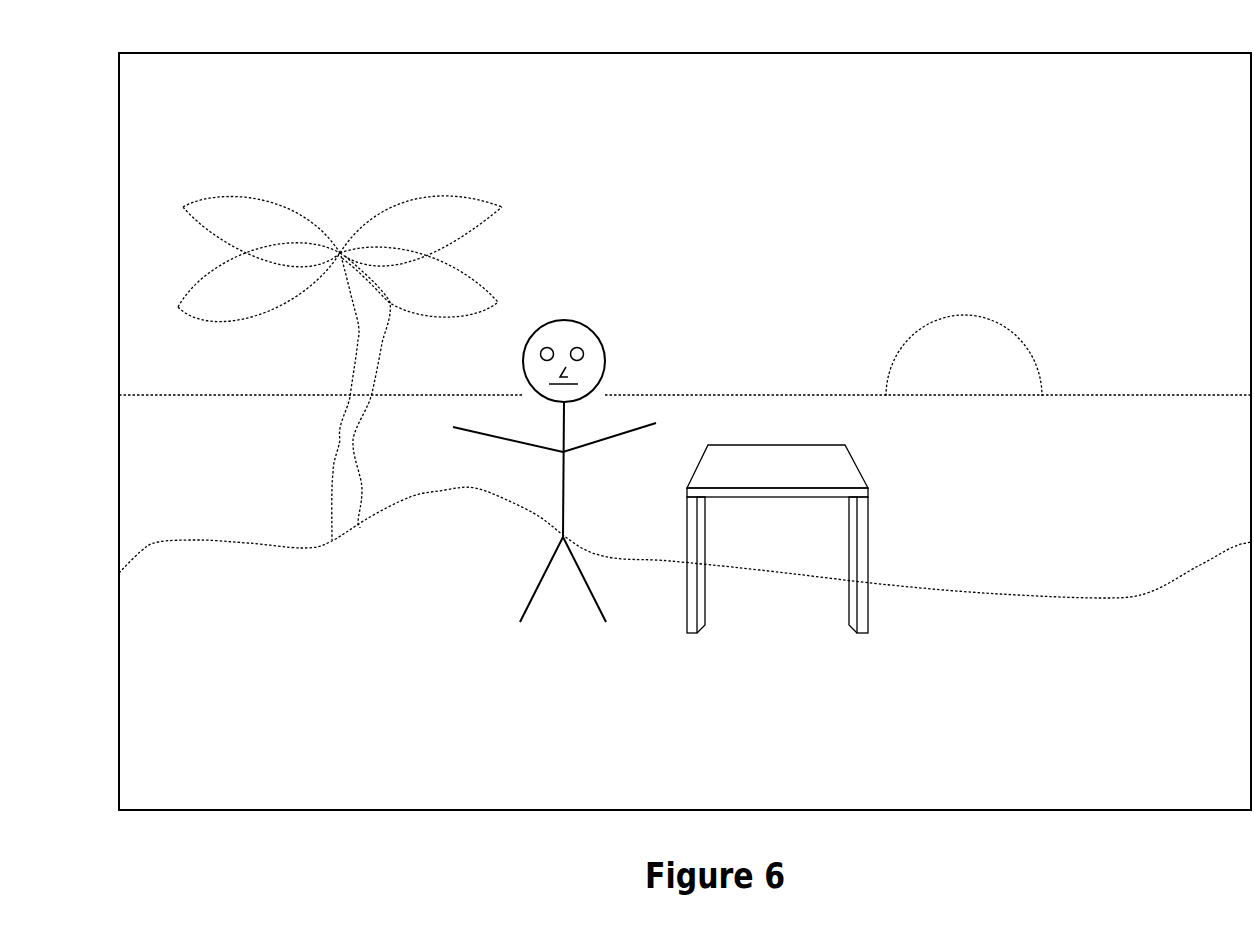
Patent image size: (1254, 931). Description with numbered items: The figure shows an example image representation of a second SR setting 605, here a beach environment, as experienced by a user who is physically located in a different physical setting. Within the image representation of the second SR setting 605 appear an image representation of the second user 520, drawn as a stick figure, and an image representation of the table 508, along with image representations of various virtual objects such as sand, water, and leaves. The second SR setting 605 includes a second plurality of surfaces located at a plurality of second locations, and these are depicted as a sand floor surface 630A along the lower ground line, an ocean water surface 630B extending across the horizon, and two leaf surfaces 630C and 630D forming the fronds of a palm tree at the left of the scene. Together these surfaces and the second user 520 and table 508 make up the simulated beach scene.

The second SR setting 605 is at (1051, 52).
The second user 520 is at (590, 298).
The table 508 is at (793, 443).
The sand floor surface 630A is at (420, 610).
The ocean water surface 630B is at (288, 490).
The leaf surface 630C is at (275, 297).
The leaf surface 630D is at (452, 235).